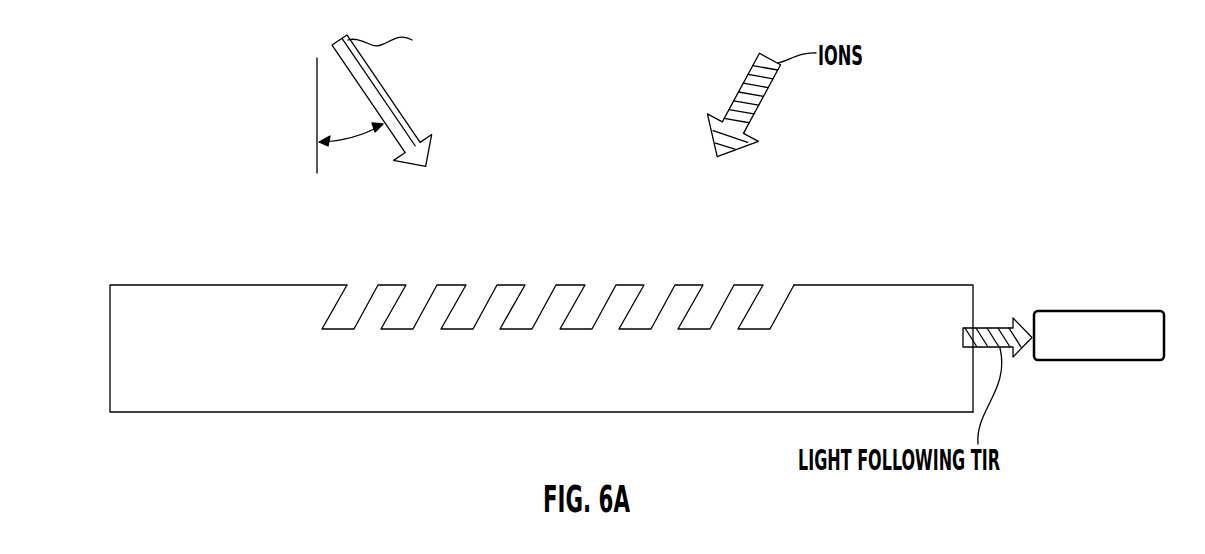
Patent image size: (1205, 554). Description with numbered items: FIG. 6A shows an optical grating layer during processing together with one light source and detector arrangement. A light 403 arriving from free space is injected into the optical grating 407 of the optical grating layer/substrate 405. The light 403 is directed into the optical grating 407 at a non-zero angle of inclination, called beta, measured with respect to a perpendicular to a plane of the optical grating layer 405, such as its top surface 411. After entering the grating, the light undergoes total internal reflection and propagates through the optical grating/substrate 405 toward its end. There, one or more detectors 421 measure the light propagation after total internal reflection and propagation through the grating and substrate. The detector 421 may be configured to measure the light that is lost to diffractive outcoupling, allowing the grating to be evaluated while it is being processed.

The light 403 is at (380, 93).
The optical grating layer/substrate 405 is at (919, 273).
The optical grating 407 is at (520, 272).
The top surface 411 is at (178, 285).
The detector 421 is at (1105, 311).